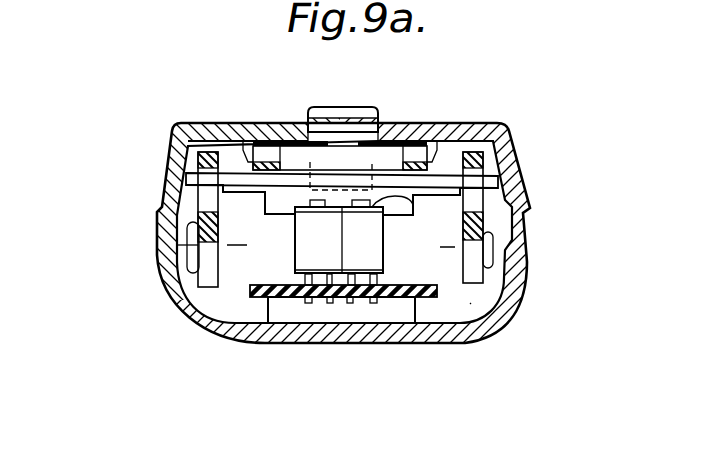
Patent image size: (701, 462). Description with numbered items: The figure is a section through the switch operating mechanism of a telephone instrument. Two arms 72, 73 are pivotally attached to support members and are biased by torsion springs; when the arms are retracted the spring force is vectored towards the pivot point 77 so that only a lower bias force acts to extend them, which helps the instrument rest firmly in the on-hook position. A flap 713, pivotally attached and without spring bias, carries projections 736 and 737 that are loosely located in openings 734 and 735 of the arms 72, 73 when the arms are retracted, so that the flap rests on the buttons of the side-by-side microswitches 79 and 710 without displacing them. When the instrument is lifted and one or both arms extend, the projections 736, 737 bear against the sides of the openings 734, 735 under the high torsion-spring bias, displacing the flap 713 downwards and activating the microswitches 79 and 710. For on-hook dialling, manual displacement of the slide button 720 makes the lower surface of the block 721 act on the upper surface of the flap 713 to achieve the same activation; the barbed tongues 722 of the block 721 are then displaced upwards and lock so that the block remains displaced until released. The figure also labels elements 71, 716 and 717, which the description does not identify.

The housing 71 is at (300, 188).
The arm 72 is at (526, 328).
The arm 73 is at (123, 234).
The pivot point 77 is at (343, 329).
The microswitch 79 is at (343, 332).
The microswitch 710 is at (341, 333).
The flap 713 is at (240, 232).
The bracket arm 716 is at (435, 216).
The motor 717 is at (365, 223).
The slide button 720 is at (381, 94).
The block 721 is at (324, 112).
The tongues 722 is at (327, 112).
The opening 734 is at (542, 217).
The opening 735 is at (111, 228).
The projection 736 is at (537, 201).
The projection 737 is at (259, 173).